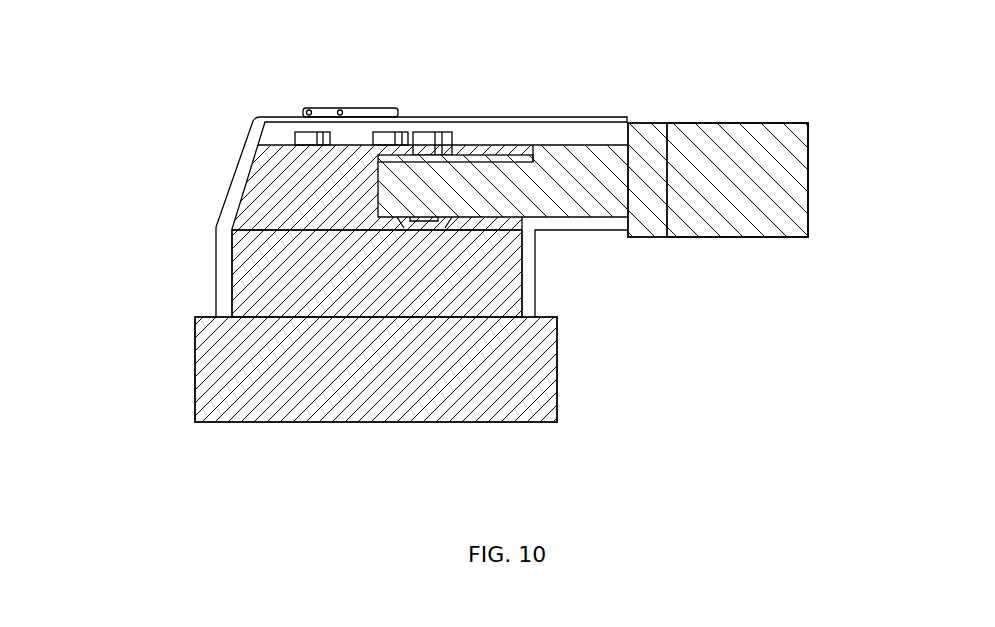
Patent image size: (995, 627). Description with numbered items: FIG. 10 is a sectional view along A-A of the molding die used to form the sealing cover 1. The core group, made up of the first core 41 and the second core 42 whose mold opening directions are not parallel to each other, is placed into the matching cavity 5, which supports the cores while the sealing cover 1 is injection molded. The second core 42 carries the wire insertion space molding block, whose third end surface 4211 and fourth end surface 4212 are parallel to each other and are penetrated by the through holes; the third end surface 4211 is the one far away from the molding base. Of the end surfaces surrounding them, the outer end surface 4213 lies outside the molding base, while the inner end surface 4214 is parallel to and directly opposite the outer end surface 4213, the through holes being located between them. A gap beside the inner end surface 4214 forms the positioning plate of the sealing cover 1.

The sealing cover 1 is at (202, 200).
The cavity 5 is at (431, 106).
The first core 41 is at (185, 374).
The second core 42 is at (780, 148).
The third end surface 4211 is at (573, 133).
The fourth end surface 4212 is at (602, 240).
The outer end surface 4213 is at (821, 188).
The inner end surface 4214 is at (371, 174).